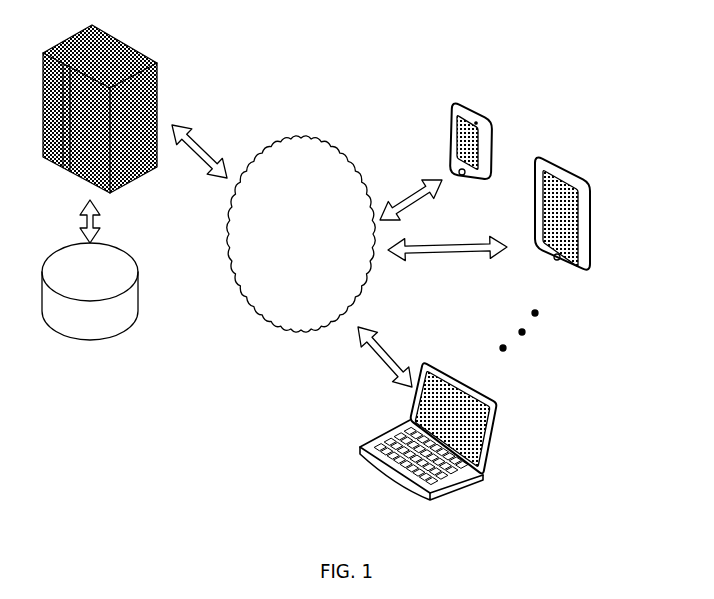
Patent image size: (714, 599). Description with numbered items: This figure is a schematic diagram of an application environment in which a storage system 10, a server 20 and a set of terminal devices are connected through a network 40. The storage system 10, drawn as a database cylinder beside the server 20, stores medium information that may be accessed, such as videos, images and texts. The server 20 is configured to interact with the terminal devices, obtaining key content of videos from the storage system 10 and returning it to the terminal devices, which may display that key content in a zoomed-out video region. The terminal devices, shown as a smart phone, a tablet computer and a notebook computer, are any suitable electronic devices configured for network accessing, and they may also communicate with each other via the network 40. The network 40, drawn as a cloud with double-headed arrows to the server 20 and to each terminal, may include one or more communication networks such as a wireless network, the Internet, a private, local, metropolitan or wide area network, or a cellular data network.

The storage system 10 is at (134, 257).
The server 20 is at (140, 53).
The network 40 is at (301, 234).